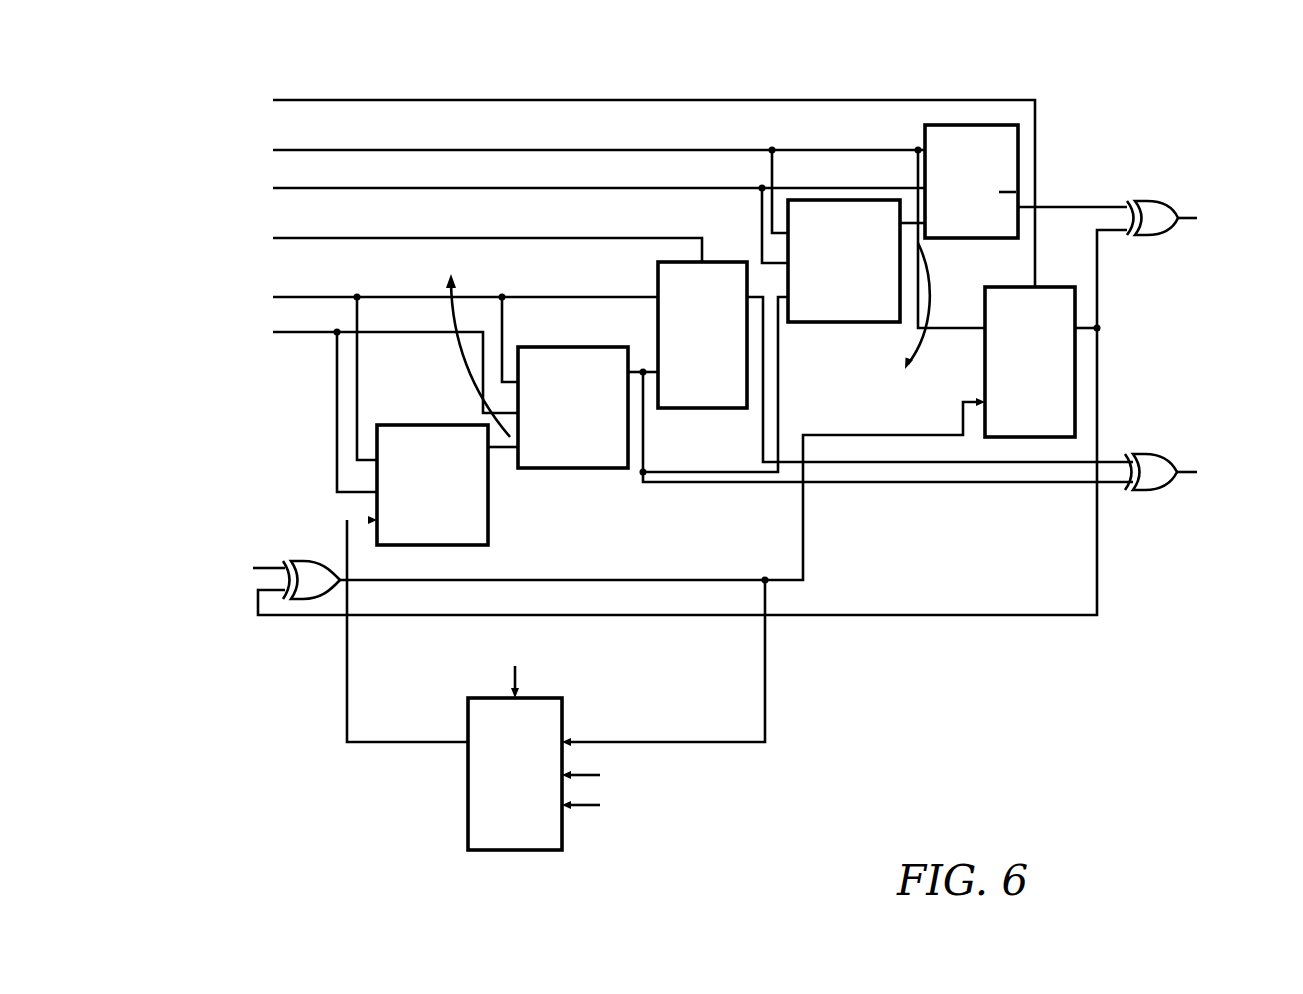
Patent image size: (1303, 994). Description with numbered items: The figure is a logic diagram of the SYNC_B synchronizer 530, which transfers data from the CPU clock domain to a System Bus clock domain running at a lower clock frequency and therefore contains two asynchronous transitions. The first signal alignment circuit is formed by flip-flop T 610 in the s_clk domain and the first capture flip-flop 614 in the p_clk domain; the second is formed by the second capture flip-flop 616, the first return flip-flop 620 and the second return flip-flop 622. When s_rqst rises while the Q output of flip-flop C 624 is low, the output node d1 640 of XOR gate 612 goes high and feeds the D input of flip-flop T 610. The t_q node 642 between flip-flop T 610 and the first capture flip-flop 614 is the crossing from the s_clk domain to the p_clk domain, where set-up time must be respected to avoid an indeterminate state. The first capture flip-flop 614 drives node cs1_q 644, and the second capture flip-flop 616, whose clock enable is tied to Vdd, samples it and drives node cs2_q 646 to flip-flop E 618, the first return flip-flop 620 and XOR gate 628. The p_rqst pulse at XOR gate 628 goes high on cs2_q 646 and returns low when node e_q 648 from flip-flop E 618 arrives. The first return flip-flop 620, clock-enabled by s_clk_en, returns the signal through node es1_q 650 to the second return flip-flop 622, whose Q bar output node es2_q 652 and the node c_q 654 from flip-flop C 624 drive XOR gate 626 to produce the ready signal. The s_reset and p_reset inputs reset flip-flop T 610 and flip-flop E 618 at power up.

The SYNC_B synchronizer 530 is at (960, 693).
The flip-flop T 610 is at (562, 712).
The XOR gate 612 is at (307, 560).
The flip-flop CS1 614 is at (430, 425).
The flip-flop CS2 616 is at (581, 347).
The flip-flop E 618 is at (670, 262).
The flip-flop ES1 620 is at (850, 200).
The flip-flop ES2 622 is at (988, 125).
The flip-flop C 624 is at (1075, 300).
The XOR gate 626 is at (1157, 237).
The XOR gate 628 is at (1140, 492).
The node d1 640 is at (450, 582).
The t_q node 642 is at (408, 742).
The node cs1_q 644 is at (502, 449).
The node cs2_q 646 is at (645, 376).
The node e_q 648 is at (882, 463).
The node es1_q 650 is at (908, 223).
The node es2_q 652 is at (1088, 207).
The node c_q 654 is at (1095, 355).